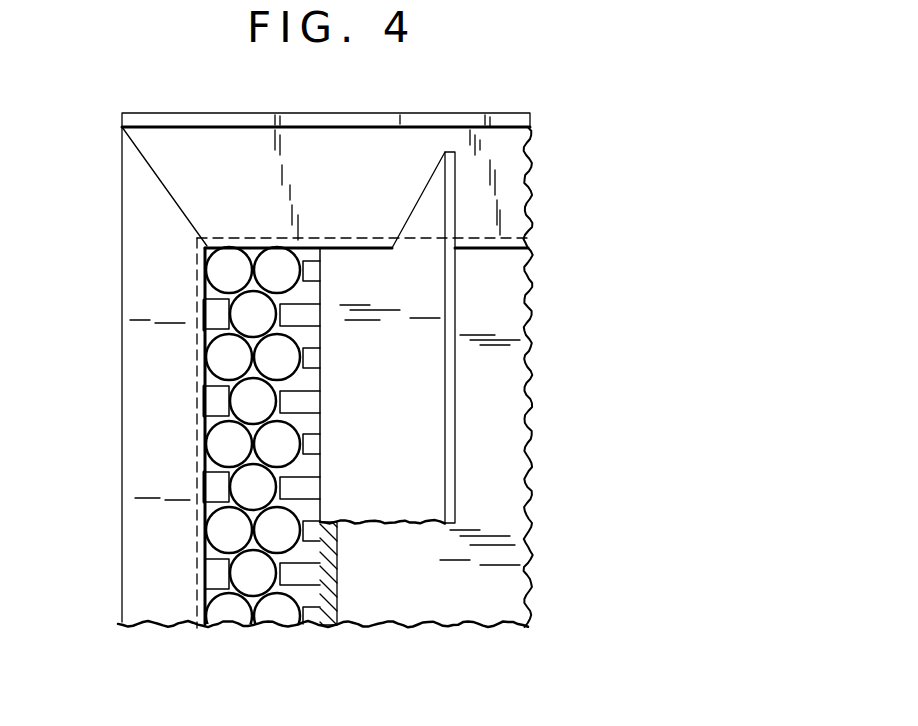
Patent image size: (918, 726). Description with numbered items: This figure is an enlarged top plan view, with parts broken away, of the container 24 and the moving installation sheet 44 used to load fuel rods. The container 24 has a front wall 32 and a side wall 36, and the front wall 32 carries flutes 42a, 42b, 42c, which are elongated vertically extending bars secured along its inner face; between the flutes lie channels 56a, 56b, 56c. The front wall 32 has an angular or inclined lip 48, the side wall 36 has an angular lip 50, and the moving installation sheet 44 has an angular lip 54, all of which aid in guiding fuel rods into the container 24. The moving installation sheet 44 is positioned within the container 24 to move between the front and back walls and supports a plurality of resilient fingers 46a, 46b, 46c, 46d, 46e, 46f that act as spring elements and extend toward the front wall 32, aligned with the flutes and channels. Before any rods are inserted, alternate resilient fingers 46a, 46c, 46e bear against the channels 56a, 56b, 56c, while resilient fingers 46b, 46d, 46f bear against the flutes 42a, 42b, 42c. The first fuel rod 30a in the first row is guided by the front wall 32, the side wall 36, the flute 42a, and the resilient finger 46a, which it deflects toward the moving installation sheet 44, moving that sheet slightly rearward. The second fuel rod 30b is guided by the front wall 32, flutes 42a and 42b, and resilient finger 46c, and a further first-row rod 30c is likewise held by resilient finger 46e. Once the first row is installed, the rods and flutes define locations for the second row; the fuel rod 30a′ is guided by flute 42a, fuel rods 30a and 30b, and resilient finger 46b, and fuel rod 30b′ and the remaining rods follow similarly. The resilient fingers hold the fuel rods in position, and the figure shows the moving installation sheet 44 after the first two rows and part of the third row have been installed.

The container 24 is at (122, 113).
The angular lip 50 is at (510, 164).
The side wall 36 is at (528, 250).
The angular lip 54 is at (460, 451).
The angular lip 48 is at (157, 602).
The front wall 32 is at (206, 628).
The moving installation sheet 44 is at (338, 597).
The fuel rod 30a is at (226, 270).
The fuel rod 30a′ is at (258, 316).
The fuel rod 30b is at (226, 357).
The fuel rod 30b′ is at (255, 398).
The fuel rod 30c is at (227, 443).
The channel 56a is at (220, 314).
The channel 56b is at (216, 398).
The channel 56c is at (220, 487).
The flute 42a is at (207, 318).
The flute 42b is at (207, 404).
The flute 42c is at (207, 490).
The resilient finger 46a is at (312, 271).
The resilient finger 46b is at (300, 316).
The resilient finger 46c is at (312, 358).
The resilient finger 46d is at (292, 407).
The resilient finger 46e is at (312, 448).
The resilient finger 46f is at (312, 491).